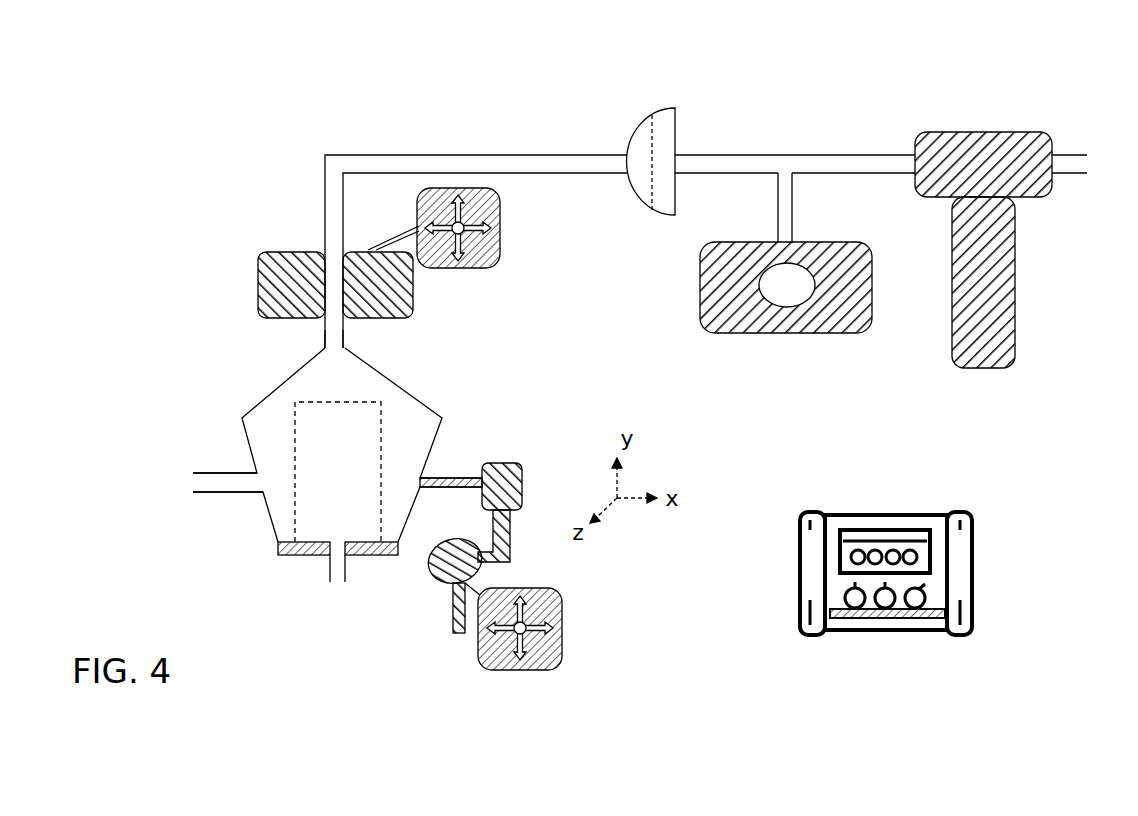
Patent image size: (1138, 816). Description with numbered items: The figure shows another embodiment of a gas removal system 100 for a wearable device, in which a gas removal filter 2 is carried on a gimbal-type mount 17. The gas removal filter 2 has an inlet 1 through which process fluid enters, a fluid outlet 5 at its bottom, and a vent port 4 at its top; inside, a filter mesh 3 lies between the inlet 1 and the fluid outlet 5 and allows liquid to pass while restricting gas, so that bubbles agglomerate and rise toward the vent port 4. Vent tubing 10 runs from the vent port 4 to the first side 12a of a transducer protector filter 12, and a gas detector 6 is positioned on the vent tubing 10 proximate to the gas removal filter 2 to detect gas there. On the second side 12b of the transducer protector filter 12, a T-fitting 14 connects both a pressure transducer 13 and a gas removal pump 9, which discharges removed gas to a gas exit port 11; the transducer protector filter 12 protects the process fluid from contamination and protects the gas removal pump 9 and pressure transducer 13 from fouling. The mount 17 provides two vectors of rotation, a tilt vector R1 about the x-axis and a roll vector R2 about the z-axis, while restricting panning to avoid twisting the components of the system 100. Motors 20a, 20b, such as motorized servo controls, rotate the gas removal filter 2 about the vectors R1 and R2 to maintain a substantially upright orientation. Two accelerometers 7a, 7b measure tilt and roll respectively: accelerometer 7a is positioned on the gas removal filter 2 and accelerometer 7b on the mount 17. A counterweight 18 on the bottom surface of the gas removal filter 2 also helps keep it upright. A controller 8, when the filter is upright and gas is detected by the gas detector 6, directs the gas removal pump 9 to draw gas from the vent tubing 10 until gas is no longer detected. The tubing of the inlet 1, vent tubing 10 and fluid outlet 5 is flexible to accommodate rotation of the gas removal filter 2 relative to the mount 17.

The gas removal system 100 is at (208, 130).
The inlet 1 is at (192, 481).
The gas removal filter 2 is at (442, 417).
The filter mesh 3 is at (381, 403).
The vent port 4 is at (323, 348).
The fluid outlet 5 is at (333, 583).
The gas detector 6 is at (413, 298).
The accelerometer 7a is at (500, 243).
The accelerometer 7b is at (558, 668).
The controller 8 is at (972, 536).
The gas removal pump 9 is at (1010, 312).
The vent tubing 10 is at (333, 154).
The gas exit port 11 is at (1085, 165).
The transducer protector filter 12 is at (635, 198).
The first side 12a is at (650, 137).
The second side 12b is at (656, 156).
The pressure transducer 13 is at (703, 330).
The T-fitting 14 is at (785, 152).
The mount 17 is at (452, 612).
The counterweight 18 is at (276, 553).
The motor 20a is at (502, 462).
The motor 20b is at (483, 563).
The tilt vector R1 is at (516, 455).
The roll vector R2 is at (445, 537).